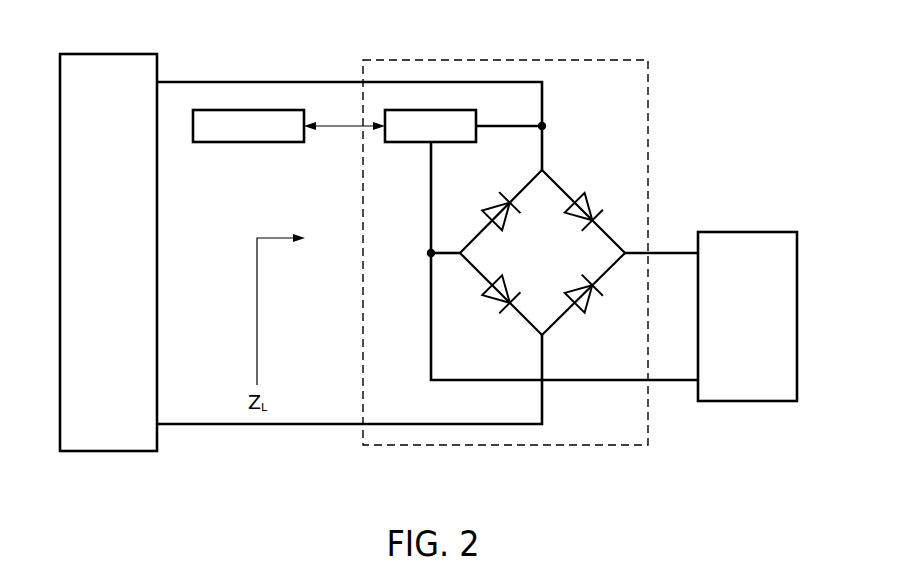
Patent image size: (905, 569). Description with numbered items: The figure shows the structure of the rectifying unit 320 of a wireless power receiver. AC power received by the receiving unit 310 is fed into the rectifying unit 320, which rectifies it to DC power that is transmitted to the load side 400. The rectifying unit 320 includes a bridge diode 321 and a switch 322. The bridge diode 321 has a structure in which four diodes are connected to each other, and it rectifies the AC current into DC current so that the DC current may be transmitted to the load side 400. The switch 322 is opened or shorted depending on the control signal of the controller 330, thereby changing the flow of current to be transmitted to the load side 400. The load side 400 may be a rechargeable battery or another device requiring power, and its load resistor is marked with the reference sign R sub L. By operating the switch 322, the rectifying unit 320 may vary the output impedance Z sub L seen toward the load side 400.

The receiving unit 310 is at (113, 53).
The rectifying unit 320 is at (570, 60).
The bridge diode 321 is at (557, 175).
The switch 322 is at (433, 110).
The controller 330 is at (258, 110).
The load side 400 is at (745, 232).